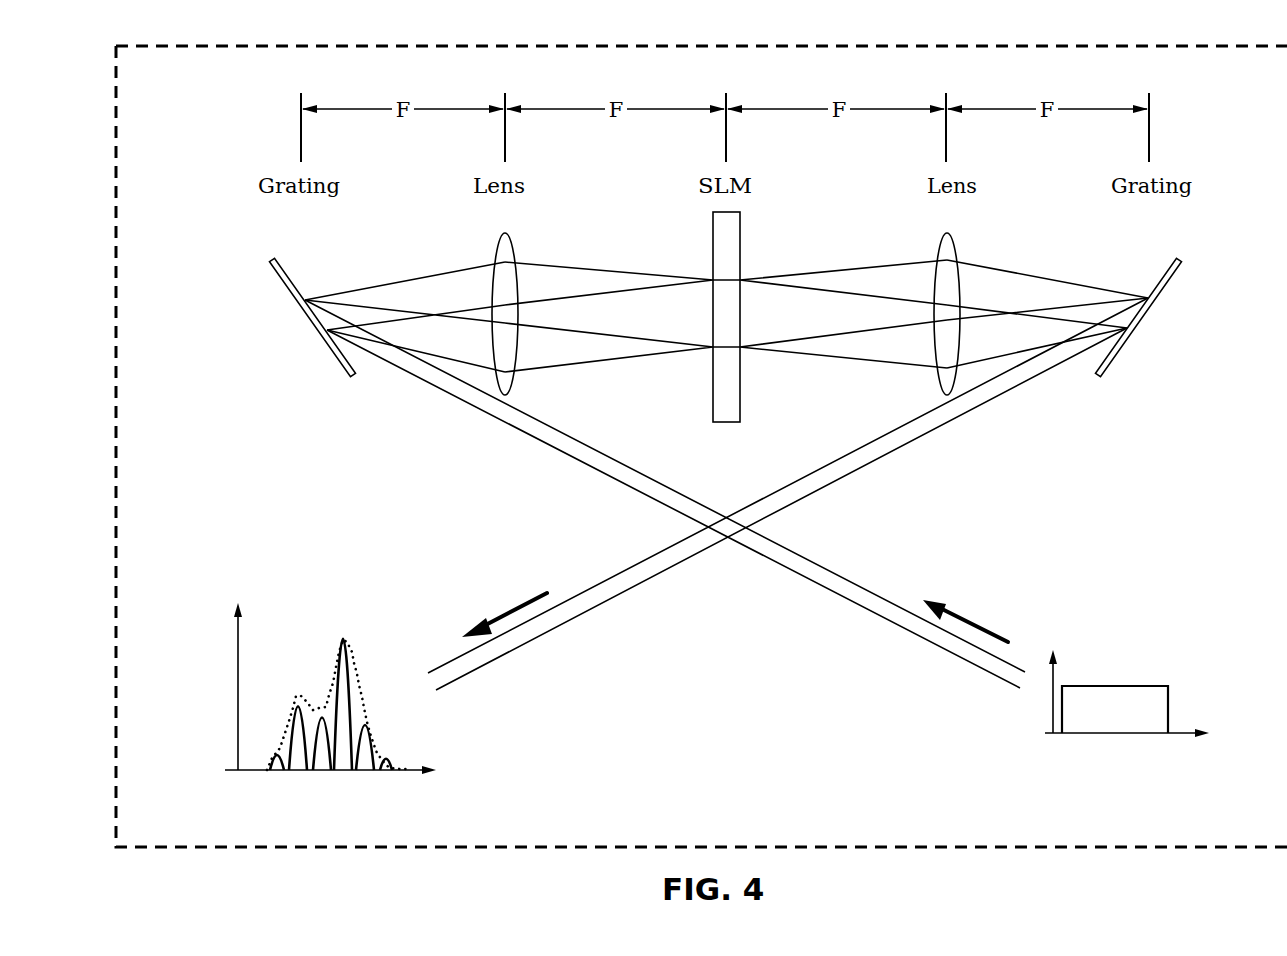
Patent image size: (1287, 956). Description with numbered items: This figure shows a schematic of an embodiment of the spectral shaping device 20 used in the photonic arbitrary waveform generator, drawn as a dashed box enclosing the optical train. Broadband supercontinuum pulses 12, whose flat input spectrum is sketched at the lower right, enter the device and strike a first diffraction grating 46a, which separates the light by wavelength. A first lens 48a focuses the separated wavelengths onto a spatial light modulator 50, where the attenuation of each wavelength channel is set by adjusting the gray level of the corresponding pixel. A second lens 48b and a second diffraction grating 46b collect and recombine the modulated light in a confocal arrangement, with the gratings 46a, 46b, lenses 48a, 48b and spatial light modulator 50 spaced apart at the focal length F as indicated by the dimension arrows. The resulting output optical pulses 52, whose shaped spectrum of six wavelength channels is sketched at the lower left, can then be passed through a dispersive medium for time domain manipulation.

The spectral shaping device 20 is at (112, 122).
The pulses 12 is at (1150, 632).
The diffraction grating 46a is at (281, 280).
The diffraction grating 46b is at (1163, 280).
The lens 48a is at (500, 242).
The lens 48b is at (943, 236).
The spatial light modulator 50 is at (712, 240).
The output optical pulses 52 is at (262, 570).